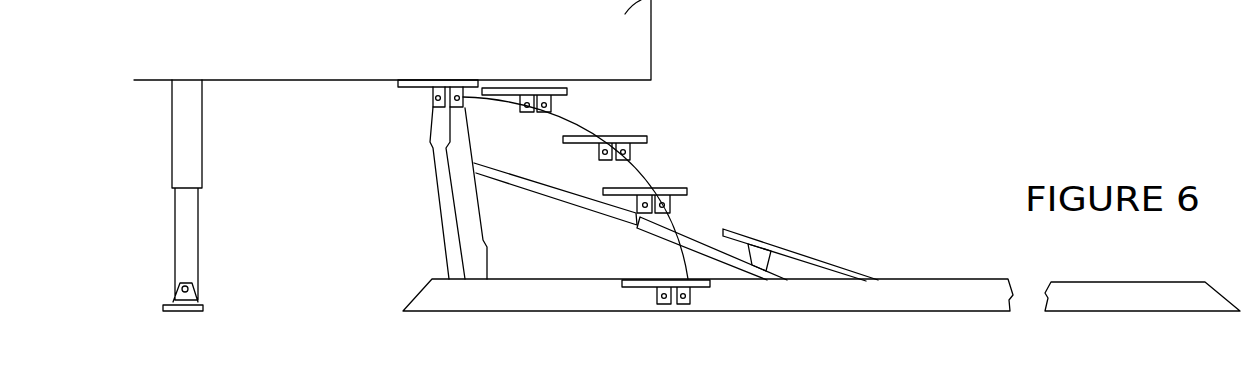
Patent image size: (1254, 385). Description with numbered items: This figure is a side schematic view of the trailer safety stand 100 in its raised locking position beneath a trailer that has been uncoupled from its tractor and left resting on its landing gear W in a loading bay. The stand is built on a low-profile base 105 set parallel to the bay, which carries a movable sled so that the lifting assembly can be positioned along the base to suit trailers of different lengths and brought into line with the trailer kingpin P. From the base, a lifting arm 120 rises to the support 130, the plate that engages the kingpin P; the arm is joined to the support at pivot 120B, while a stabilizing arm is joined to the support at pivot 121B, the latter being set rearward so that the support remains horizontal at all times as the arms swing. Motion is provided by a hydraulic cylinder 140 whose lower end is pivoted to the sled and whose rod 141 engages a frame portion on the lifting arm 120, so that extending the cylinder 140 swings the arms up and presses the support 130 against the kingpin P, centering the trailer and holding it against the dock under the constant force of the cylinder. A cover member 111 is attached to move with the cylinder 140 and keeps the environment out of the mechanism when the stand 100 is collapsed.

The safety stand 100 is at (878, 163).
The base 105 is at (499, 308).
The cover member 111 is at (824, 260).
The lifting arm 120 is at (437, 208).
The pivot 120B is at (437, 98).
The pivot 121B is at (456, 101).
The support 130 is at (646, 138).
The cylinder 140 is at (698, 237).
The rod 141 is at (558, 195).
The kingpin P is at (458, 82).
The landing gear W is at (197, 157).